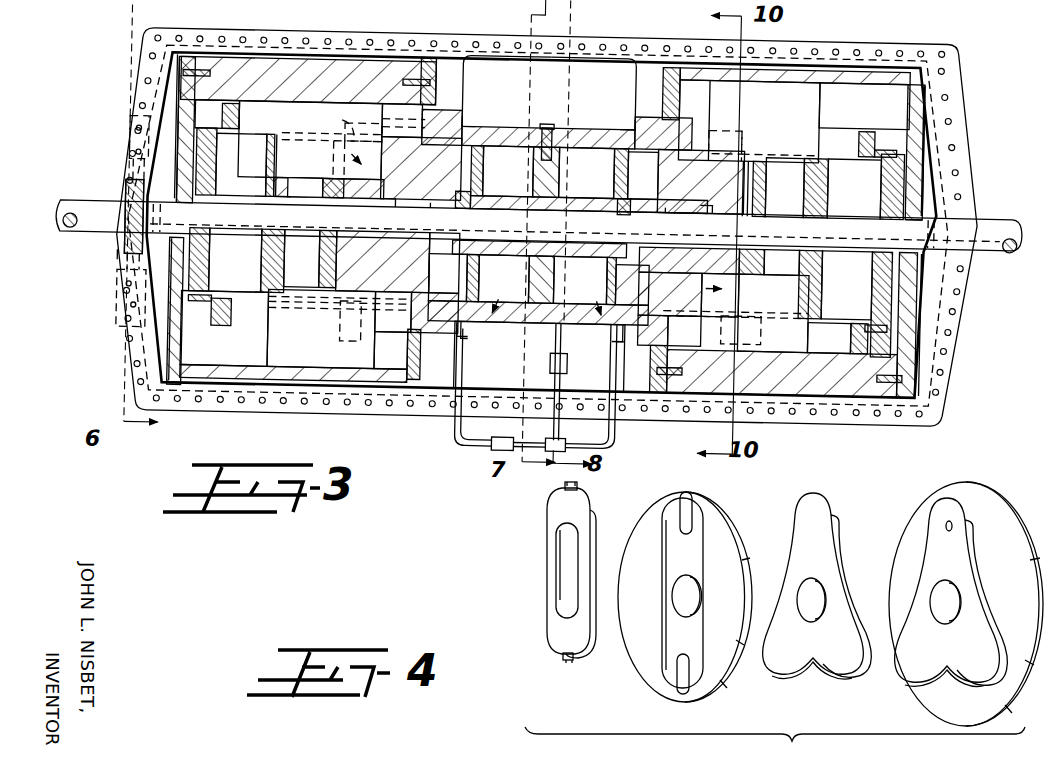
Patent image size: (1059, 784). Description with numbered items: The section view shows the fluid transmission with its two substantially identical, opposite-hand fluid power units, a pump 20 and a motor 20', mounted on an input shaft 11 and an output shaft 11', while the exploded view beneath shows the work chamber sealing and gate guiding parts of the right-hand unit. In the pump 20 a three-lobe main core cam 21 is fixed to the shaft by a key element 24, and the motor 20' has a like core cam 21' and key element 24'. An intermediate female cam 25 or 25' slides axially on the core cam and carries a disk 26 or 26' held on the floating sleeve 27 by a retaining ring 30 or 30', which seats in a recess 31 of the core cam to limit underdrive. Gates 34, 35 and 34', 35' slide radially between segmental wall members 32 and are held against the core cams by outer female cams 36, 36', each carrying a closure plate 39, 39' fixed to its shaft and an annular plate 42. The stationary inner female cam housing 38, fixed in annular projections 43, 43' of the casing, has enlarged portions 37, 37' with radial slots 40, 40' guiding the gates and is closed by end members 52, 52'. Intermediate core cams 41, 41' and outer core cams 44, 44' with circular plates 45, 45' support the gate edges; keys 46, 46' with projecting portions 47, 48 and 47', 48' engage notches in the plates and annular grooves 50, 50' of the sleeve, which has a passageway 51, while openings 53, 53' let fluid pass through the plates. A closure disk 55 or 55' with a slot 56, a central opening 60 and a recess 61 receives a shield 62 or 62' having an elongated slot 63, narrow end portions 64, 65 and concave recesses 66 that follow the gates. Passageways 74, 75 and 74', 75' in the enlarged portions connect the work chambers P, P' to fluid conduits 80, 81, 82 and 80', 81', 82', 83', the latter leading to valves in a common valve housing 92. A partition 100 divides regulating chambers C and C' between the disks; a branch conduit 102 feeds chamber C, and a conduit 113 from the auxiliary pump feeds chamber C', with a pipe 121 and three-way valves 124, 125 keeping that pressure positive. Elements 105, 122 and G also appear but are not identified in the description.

In FIG. 3, the pump 20 is at (547, 239).
In FIG. 3, the motor 20' is at (293, 402).
In FIG. 3, the input shaft 11 is at (539, 213).
In FIG. 3, the output shaft 11' is at (59, 231).
In FIG. 3, the main inner rotatable core cam 21 is at (679, 228).
In FIG. 3, the main core cam 21' is at (383, 262).
In FIG. 3, the key element 24 is at (714, 223).
In FIG. 3, the key element 24' is at (377, 213).
In FIG. 3, the intermediate female cam 25 is at (669, 307).
In FIG. 3, the intermediate female cam 25' is at (422, 152).
In FIG. 3, the disk 26 is at (574, 152).
In FIG. 3, the disk 26' is at (498, 253).
In FIG. 3, the floating sleeve 27 is at (574, 270).
In FIG. 3, the retaining ring 30 is at (615, 174).
In FIG. 3, the retaining ring 30' is at (447, 267).
In FIG. 3, the recess 31 is at (709, 292).
In FIG. 3, the work chamber wall member 32 is at (772, 150).
In FIG. 3, the gate 34 is at (768, 122).
In FIG. 3, the gate 34' is at (332, 135).
In FIG. 3, the gate 35 is at (782, 374).
In FIG. 3, the gate 35' is at (343, 330).
In FIG. 3, the outer female cam 36 is at (799, 230).
In FIG. 3, the outer female cam 36' is at (302, 220).
In FIG. 3, the enlarged portion 37 is at (876, 229).
In FIG. 3, the enlarged portion 37' is at (215, 216).
In FIG. 3, the inner female cam housing 38 is at (476, 132).
In FIG. 3, the closure plate 39 is at (963, 152).
In FIG. 3, the closure plate 39' is at (133, 129).
In FIG. 3, the radial slot 40 is at (858, 234).
In FIG. 3, the radial slot 40' is at (224, 329).
In FIG. 3, the intermediate core cam 41 is at (715, 244).
In FIG. 4, the intermediate core cam 41 is at (817, 580).
In FIG. 3, the intermediate core cam 41' is at (318, 233).
In FIG. 3, the annular plate 42 is at (668, 92).
In FIG. 3, the annular projection 43 is at (593, 93).
In FIG. 3, the annular projection 43' is at (506, 91).
In FIG. 3, the outer core cam 44 is at (799, 238).
In FIG. 4, the outer core cam 44 is at (951, 570).
In FIG. 3, the outer core cam 44' is at (286, 261).
In FIG. 3, the circular plate 45 is at (846, 285).
In FIG. 4, the circular plate 45 is at (966, 596).
In FIG. 3, the circular plate 45' is at (247, 164).
In FIG. 3, the key 46 is at (679, 225).
In FIG. 3, the key 46' is at (409, 215).
In FIG. 3, the projecting portion 47 is at (539, 233).
In FIG. 3, the projecting portion 47' is at (589, 221).
In FIG. 3, the projecting portion 48 is at (870, 230).
In FIG. 3, the projecting portion 48' is at (267, 213).
In FIG. 3, the annular groove 50 is at (629, 220).
In FIG. 3, the annular groove 50' is at (453, 210).
In FIG. 3, the passageway 51 is at (572, 292).
In FIG. 3, the end member 52 is at (861, 304).
In FIG. 3, the end member 52' is at (241, 164).
In FIG. 3, the opening 53 is at (865, 185).
In FIG. 4, the opening 53 is at (919, 511).
In FIG. 3, the opening 53' is at (227, 260).
In FIG. 3, the axial outer wall disk 55 is at (782, 261).
In FIG. 4, the axial outer wall disk 55 is at (696, 597).
In FIG. 3, the axial outer wall disk 55' is at (329, 187).
In FIG. 4, the slot 56 is at (686, 493).
In FIG. 4, the central opening 60 is at (682, 577).
In FIG. 4, the recess 61 is at (662, 621).
In FIG. 3, the shield 62 is at (773, 187).
In FIG. 4, the shield 62 is at (545, 573).
In FIG. 3, the shield 62' is at (302, 259).
In FIG. 4, the slot 63 is at (575, 600).
In FIG. 4, the end portion 64 is at (563, 490).
In FIG. 4, the end portion 65 is at (561, 655).
In FIG. 4, the concave recess 66 is at (575, 487).
In FIG. 3, the passageway 74 is at (747, 128).
In FIG. 3, the passageway 74' is at (364, 109).
In FIG. 3, the passageway 75 is at (743, 333).
In FIG. 3, the passageway 75' is at (343, 327).
In FIG. 3, the fluid conduit 80 is at (626, 229).
In FIG. 3, the fluid conduit 80' is at (452, 227).
In FIG. 3, the fluid conduit 81 is at (597, 395).
In FIG. 3, the fluid conduit 81' is at (449, 387).
In FIG. 3, the fluid conduit 82 is at (630, 357).
In FIG. 3, the fluid conduit 82' is at (421, 346).
In FIG. 3, the fluid conduit 83' is at (493, 455).
In FIG. 3, the valve housing 92 is at (497, 458).
In FIG. 3, the partition 100 is at (545, 128).
In FIG. 3, the branch conduit 102 is at (565, 385).
In FIG. 3, the valve 105 is at (570, 360).
In FIG. 3, the conduit 113 is at (134, 333).
In FIG. 3, the pipe 121 is at (131, 163).
In FIG. 3, the gear 122 is at (127, 210).
In FIG. 3, the three-way valve 124 is at (147, 318).
In FIG. 3, the three-way valve 125 is at (133, 135).
In FIG. 3, the primary work chamber P is at (686, 289).
In FIG. 3, the secondary work chamber P' is at (345, 134).
In FIG. 3, the primary regulating chamber C is at (588, 325).
In FIG. 3, the secondary regulating chamber C' is at (540, 345).
In FIG. 3, the gear G is at (118, 263).